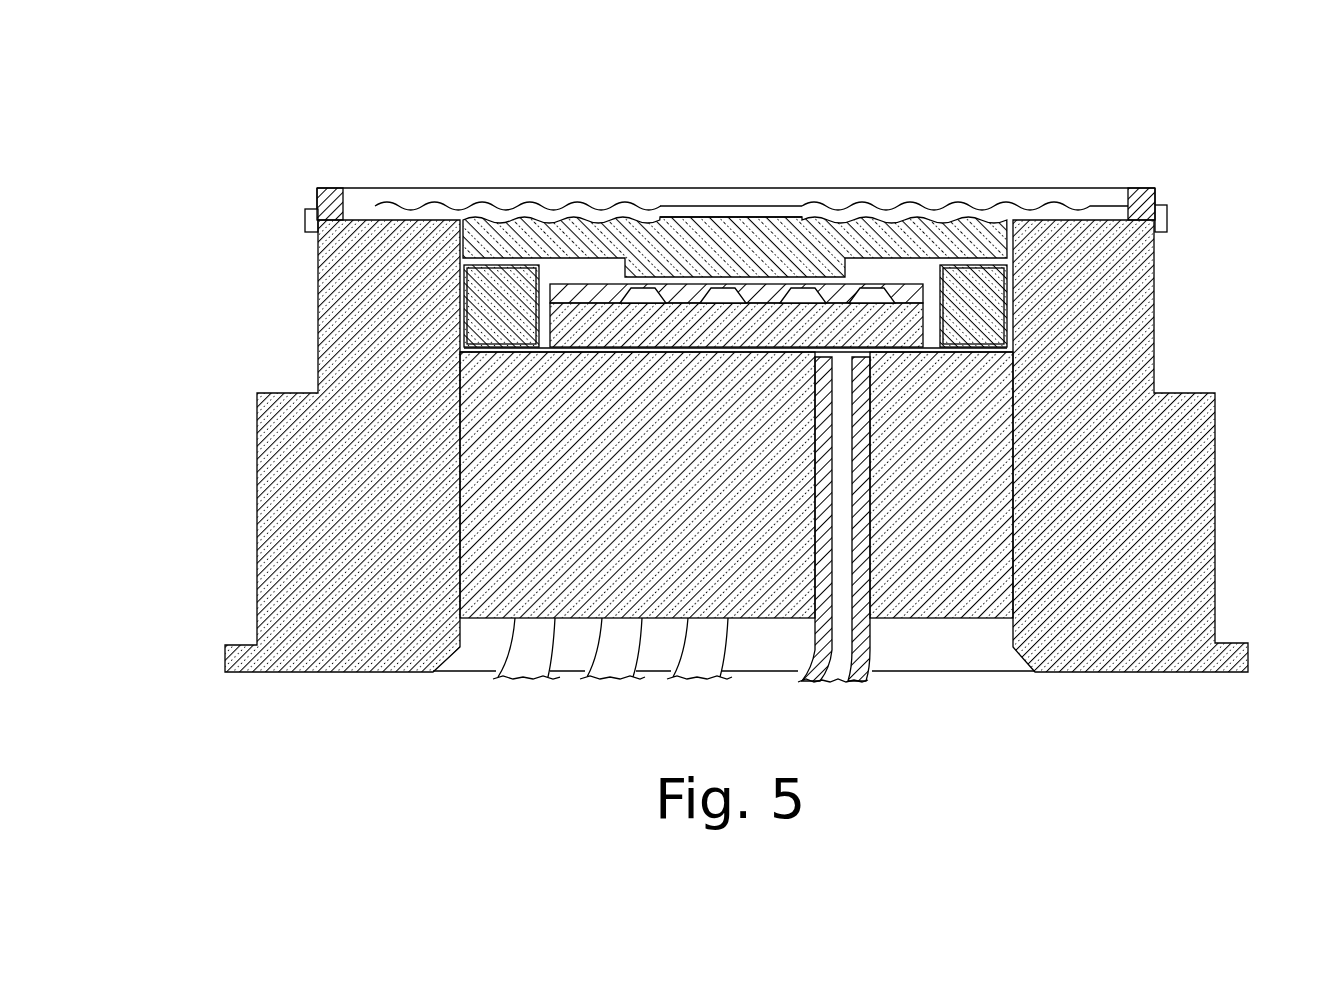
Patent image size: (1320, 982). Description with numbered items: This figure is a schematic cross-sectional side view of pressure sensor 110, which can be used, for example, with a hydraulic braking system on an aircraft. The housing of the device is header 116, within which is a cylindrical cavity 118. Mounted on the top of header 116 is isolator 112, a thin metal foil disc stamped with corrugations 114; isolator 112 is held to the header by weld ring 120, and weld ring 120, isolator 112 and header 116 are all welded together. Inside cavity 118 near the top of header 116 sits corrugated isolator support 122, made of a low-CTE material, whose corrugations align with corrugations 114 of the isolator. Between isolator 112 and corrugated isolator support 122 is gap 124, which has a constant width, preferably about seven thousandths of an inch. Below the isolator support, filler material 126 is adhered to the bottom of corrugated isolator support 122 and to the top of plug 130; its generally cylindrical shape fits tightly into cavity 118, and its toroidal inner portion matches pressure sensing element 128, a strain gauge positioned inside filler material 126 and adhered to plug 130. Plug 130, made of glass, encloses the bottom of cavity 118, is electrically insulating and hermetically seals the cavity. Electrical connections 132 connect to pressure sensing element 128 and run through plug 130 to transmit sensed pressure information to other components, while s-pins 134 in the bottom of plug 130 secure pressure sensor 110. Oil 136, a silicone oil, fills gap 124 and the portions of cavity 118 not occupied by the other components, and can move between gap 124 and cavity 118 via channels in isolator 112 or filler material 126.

The pressure sensor 110 is at (187, 140).
The isolator 112 is at (557, 193).
The corrugations 114 is at (478, 207).
The header 116 is at (353, 267).
The cavity 118 is at (457, 453).
The weld ring 120 is at (328, 197).
The corrugated isolator support 122 is at (927, 237).
The gap 124 is at (725, 217).
The filler material 126 is at (492, 332).
The pressure sensing element 128 is at (873, 323).
The plug 130 is at (948, 446).
The electrical connections 132 is at (838, 532).
The s-pins 134 is at (700, 663).
The oil 136 is at (910, 275).